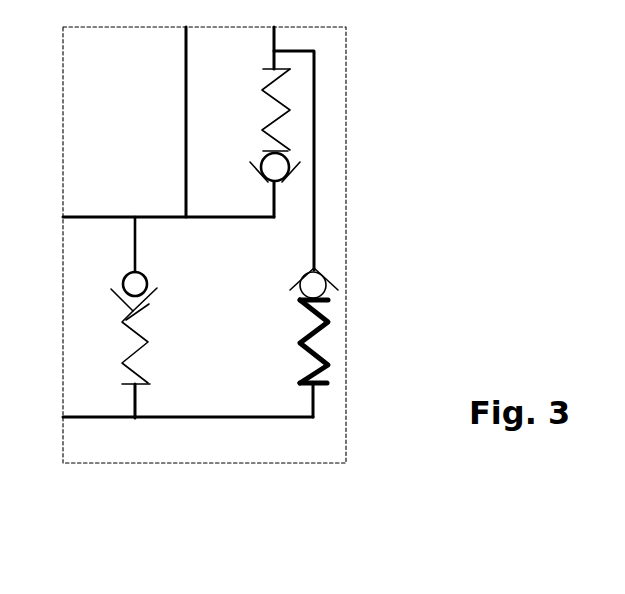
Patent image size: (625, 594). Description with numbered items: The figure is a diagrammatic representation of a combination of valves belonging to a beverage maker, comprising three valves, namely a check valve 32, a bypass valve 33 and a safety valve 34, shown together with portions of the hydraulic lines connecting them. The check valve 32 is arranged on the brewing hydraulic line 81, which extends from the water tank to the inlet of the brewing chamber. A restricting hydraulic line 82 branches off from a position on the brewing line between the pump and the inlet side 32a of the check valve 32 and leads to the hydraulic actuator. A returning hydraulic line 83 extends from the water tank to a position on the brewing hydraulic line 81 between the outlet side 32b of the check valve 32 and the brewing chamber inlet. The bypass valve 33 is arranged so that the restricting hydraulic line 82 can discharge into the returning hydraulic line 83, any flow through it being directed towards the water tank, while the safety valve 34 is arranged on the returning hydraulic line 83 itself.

The brewing hydraulic line 81 is at (96, 216).
The restricting hydraulic line 82 is at (185, 62).
The returning hydraulic line 83 is at (212, 418).
The check valve 32 is at (275, 170).
The inlet side 32a is at (280, 187).
The outlet side 32b is at (290, 68).
The bypass valve 33 is at (124, 285).
The safety valve 34 is at (313, 284).